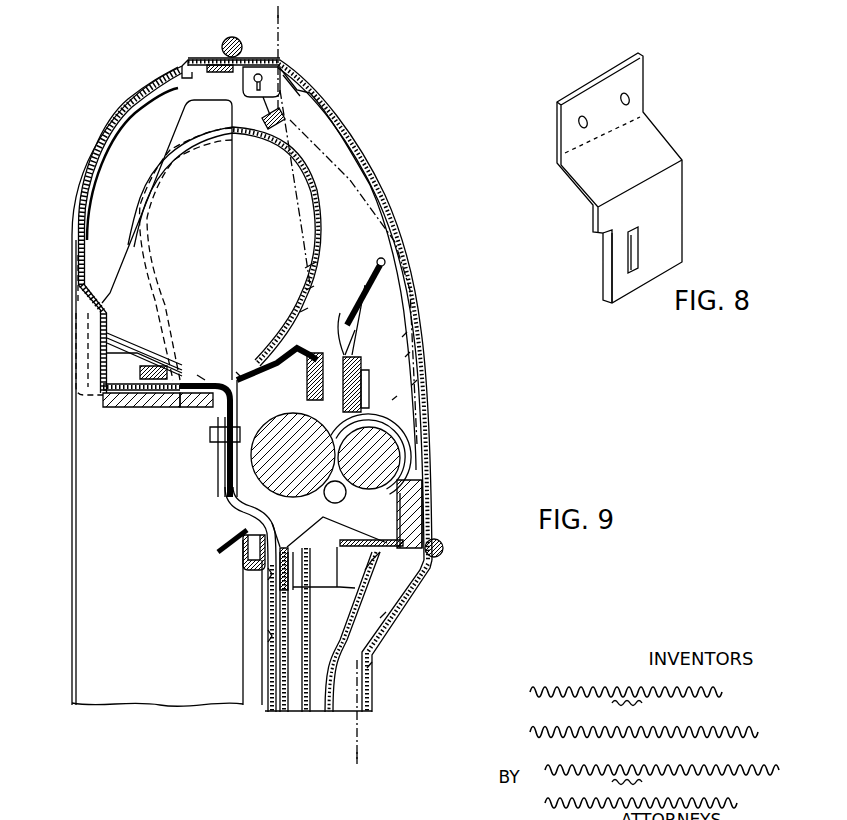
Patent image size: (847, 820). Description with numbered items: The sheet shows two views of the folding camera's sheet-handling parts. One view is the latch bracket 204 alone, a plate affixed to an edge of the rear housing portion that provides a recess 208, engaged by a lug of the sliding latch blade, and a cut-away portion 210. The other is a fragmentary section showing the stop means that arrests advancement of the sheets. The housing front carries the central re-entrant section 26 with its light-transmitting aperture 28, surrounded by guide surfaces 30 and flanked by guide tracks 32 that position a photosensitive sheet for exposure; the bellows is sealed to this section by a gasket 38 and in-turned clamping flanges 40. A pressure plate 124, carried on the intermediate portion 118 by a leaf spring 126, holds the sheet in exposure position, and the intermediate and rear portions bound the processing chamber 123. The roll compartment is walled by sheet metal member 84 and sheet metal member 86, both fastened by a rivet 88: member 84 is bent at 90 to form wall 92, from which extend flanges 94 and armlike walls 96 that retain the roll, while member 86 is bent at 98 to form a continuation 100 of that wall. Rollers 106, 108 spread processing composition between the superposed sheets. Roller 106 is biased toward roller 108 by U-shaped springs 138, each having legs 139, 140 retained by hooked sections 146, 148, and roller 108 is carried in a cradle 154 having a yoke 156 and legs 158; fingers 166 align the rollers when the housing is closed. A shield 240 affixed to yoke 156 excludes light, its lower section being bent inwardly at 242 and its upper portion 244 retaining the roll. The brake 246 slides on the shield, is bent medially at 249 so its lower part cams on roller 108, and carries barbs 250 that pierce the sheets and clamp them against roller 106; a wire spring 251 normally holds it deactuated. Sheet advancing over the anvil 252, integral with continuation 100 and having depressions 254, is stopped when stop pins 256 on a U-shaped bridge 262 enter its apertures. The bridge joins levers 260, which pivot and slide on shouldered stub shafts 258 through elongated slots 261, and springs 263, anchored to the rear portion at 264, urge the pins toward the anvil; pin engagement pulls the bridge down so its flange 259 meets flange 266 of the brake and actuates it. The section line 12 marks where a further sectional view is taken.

In FIG. 9, the section line 12- 12 is at (278, 12).
In FIG. 9, the central re-entrant section 26 is at (233, 521).
In FIG. 9, the light-transmitting aperture 28 is at (257, 648).
In FIG. 9, the guide surfaces 30 is at (270, 636).
In FIG. 9, the guide tracks 32 is at (271, 598).
In FIG. 9, the gasket 38 is at (250, 546).
In FIG. 9, the in-turned clamping flanges 40 is at (242, 560).
In FIG. 9, the sheet metal member 84 is at (226, 421).
In FIG. 9, the sheet metal member 86 is at (236, 372).
In FIG. 9, the rivet 88 is at (215, 438).
In FIG. 9, the bend 90 is at (200, 388).
In FIG. 9, the wall 92 is at (133, 352).
In FIG. 9, the flanges 94 is at (95, 307).
In FIG. 9, the armlike walls 96 is at (175, 201).
In FIG. 9, the bend 98 is at (197, 375).
In FIG. 9, the continuation 100 is at (292, 352).
In FIG. 9, the roller 106 is at (255, 457).
In FIG. 9, the roller 108 is at (396, 460).
In FIG. 9, the intermediate portion 118 is at (311, 610).
In FIG. 9, the processing chamber 123 is at (367, 668).
In FIG. 9, the pressure plate 124 is at (298, 700).
In FIG. 9, the leaf spring 126 is at (266, 697).
In FIG. 9, the U-shaped springs 138 is at (311, 165).
In FIG. 9, the leg 139 is at (152, 246).
In FIG. 9, the leg 140 is at (305, 268).
In FIG. 9, the hooked section 146 is at (130, 368).
In FIG. 9, the hooked section 148 is at (268, 372).
In FIG. 9, the cradle 154 is at (400, 557).
In FIG. 9, the yoke 156 is at (422, 525).
In FIG. 9, the legs 158 is at (362, 513).
In FIG. 9, the fingers 166 is at (443, 546).
In FIG. 8, the bracket 204 is at (637, 84).
In FIG. 8, the recess 208 is at (636, 252).
In FIG. 8, the cut-away portion 210 is at (607, 256).
In FIG. 9, the shield 240 is at (412, 501).
In FIG. 9, the inwardly bent lower section 242 is at (365, 570).
In FIG. 9, the upper portion 244 is at (381, 263).
In FIG. 9, the brake 246 is at (358, 355).
In FIG. 9, the bent portion 249 is at (392, 400).
In FIG. 9, the barbs 250 is at (390, 418).
In FIG. 9, the wire spring 251 is at (360, 380).
In FIG. 9, the anvil 252 is at (306, 290).
In FIG. 9, the depressions 254 is at (300, 312).
In FIG. 9, the stop pins 256 is at (340, 313).
In FIG. 9, the shouldered stub shafts 258 is at (345, 490).
In FIG. 9, the flange 259 is at (402, 337).
In FIG. 9, the levers 260 is at (380, 618).
In FIG. 9, the elongated slots 261 is at (355, 588).
In FIG. 9, the U-shaped bridge 262 is at (412, 385).
In FIG. 9, the springs 263 is at (288, 112).
In FIG. 9, the spring connection 264 is at (248, 80).
In FIG. 9, the flange 266 is at (405, 357).